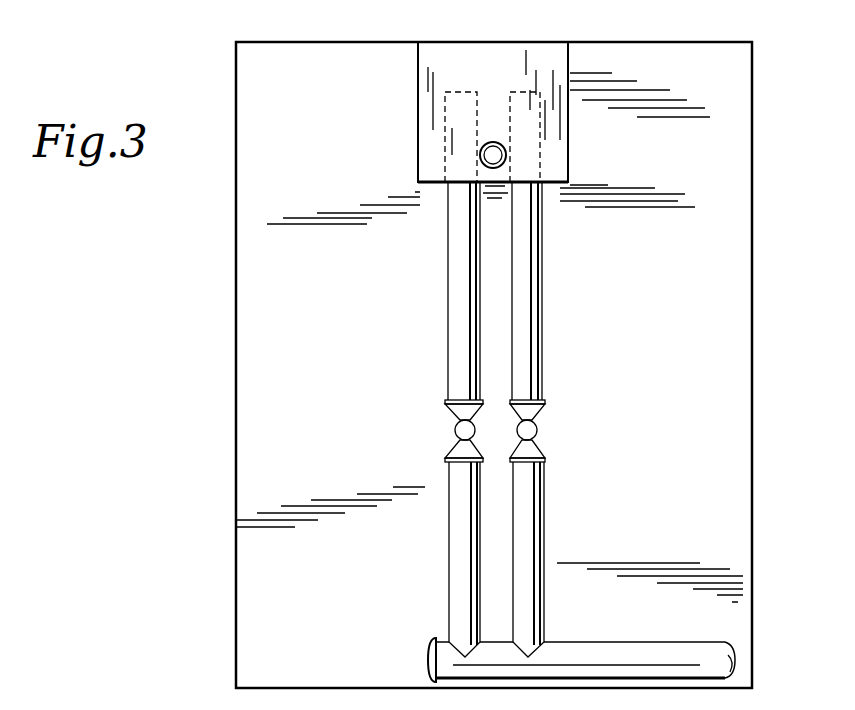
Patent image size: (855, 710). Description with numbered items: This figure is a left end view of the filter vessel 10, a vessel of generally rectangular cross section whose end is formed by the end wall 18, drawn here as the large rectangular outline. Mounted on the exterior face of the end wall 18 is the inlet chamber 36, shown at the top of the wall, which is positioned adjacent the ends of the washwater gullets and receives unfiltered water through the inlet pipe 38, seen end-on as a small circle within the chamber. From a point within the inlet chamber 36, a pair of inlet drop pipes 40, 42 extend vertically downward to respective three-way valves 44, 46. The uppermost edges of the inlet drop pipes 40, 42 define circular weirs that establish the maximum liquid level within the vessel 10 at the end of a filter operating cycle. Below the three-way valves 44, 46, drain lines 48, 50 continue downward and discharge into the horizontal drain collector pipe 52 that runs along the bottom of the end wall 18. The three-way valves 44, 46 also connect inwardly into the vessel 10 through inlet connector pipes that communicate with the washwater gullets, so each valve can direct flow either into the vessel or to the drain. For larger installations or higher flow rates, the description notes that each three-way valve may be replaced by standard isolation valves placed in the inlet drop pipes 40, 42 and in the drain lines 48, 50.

The filter vessel 10 is at (215, 247).
The end wall 18 is at (260, 74).
The inlet chamber 36 is at (570, 143).
The inlet pipe 38 is at (497, 140).
The inlet drop pipe 40 is at (448, 288).
The inlet drop pipe 42 is at (543, 282).
The three-way valve 44 is at (452, 410).
The three-way valve 46 is at (540, 410).
The drain line 48 is at (457, 550).
The drain line 50 is at (545, 543).
The drain collector pipe 52 is at (645, 650).